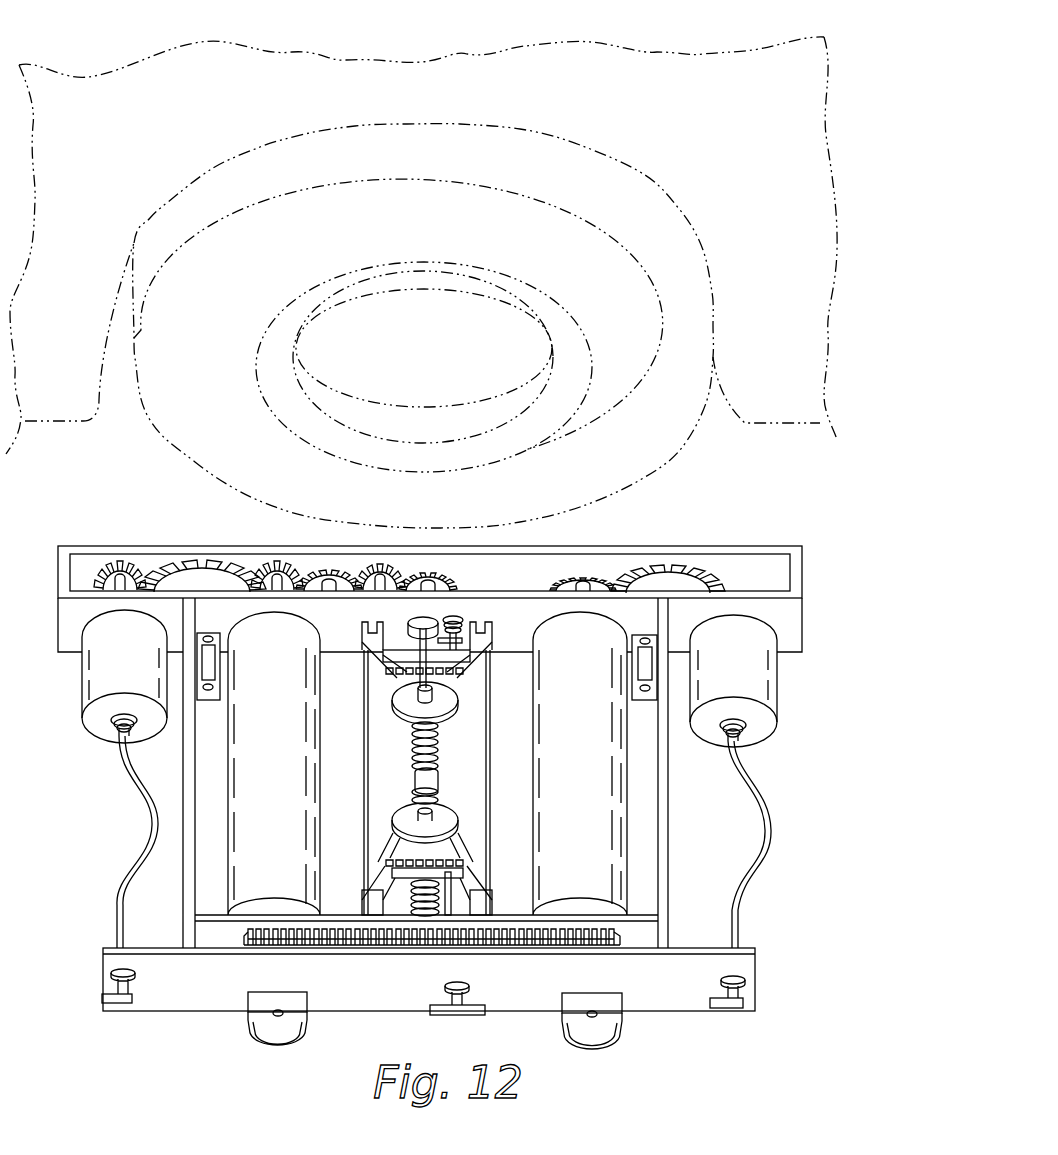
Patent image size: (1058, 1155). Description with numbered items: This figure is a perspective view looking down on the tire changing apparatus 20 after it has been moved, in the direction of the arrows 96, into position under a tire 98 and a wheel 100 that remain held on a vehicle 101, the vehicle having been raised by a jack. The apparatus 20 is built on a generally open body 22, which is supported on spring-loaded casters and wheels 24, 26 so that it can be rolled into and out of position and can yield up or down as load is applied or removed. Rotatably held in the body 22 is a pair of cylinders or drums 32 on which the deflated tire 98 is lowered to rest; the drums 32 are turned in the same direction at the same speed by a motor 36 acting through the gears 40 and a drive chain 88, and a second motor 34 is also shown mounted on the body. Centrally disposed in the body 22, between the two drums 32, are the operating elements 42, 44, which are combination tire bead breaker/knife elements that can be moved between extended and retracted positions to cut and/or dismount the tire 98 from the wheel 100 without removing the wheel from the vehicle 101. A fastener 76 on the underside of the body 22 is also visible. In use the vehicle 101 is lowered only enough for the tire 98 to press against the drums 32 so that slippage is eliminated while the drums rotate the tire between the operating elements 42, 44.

The tire changing apparatus 20 is at (227, 1042).
The body 22 is at (663, 1000).
The caster 24 is at (202, 680).
The wheel 26 is at (282, 1048).
The drum 32 is at (261, 752).
The motor 34 is at (113, 664).
The motor 36 is at (721, 672).
The gears 40 is at (722, 585).
The operating element 42 is at (463, 841).
The operating element 44 is at (458, 700).
The fastener 76 is at (457, 1015).
The drive chain 88 is at (378, 952).
The arrows 96 is at (97, 533).
The tire 98 is at (599, 462).
The wheel 100 is at (582, 333).
The vehicle 101 is at (682, 108).